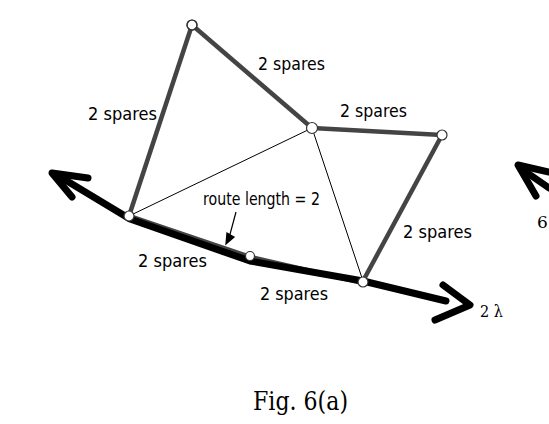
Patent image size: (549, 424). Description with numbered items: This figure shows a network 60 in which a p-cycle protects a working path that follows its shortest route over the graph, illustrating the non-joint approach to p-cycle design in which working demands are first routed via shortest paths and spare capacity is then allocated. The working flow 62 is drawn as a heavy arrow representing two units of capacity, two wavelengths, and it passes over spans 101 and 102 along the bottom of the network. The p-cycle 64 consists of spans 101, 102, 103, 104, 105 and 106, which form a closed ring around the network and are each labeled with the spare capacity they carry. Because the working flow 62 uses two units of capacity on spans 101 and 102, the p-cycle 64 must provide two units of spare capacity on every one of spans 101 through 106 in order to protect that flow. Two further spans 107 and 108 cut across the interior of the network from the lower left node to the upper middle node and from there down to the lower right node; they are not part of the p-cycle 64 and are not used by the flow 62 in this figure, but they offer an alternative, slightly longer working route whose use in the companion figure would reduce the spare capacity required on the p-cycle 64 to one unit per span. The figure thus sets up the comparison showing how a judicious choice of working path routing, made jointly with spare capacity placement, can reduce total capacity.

The network 60 is at (142, 303).
The flow 62 is at (261, 246).
The p-cycle 64 is at (165, 68).
The span 101 is at (189, 236).
The span 102 is at (306, 262).
The span 103 is at (147, 120).
The span 104 is at (252, 76).
The span 105 is at (377, 142).
The span 106 is at (410, 208).
The span 107 is at (220, 172).
The span 108 is at (338, 204).